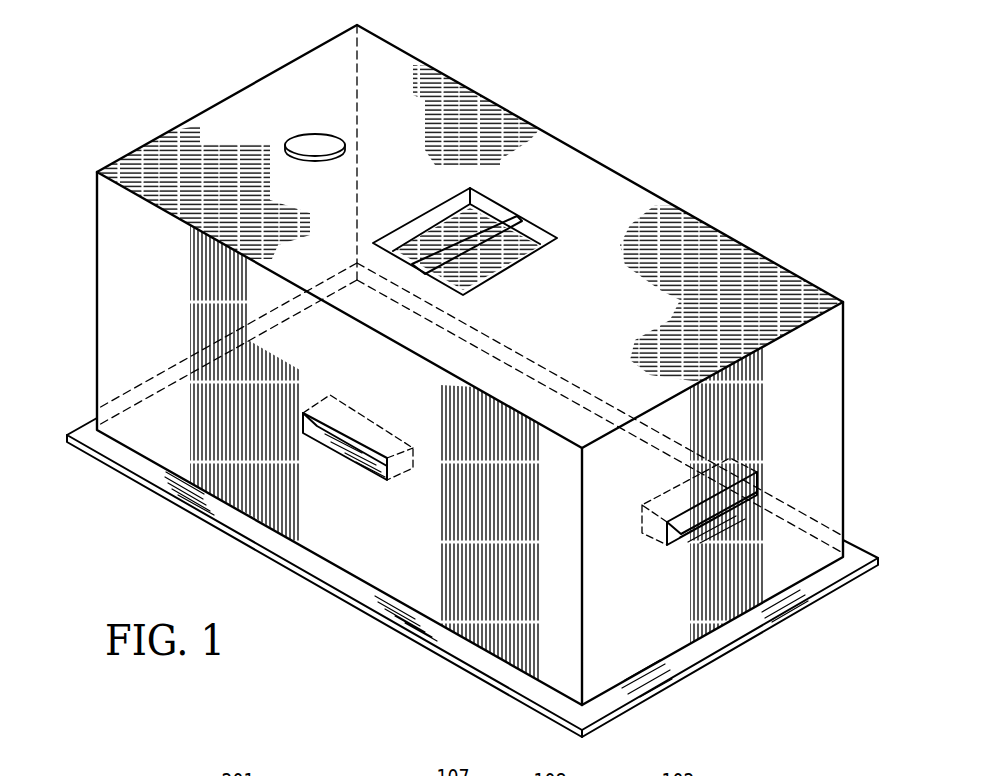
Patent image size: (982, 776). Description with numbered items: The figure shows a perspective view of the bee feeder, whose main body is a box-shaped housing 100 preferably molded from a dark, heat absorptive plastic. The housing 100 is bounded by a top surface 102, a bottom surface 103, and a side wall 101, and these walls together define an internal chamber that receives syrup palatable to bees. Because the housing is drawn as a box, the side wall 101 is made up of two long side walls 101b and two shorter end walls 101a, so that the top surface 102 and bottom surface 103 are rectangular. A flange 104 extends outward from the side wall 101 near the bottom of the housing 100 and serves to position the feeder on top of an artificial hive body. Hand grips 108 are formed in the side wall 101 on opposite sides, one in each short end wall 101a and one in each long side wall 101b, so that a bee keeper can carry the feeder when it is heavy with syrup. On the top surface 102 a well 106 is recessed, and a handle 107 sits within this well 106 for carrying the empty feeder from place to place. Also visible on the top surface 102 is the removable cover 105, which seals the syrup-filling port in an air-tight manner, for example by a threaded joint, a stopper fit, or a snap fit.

The housing 100 is at (208, 60).
The side wall 101 is at (97, 233).
The end wall 101a is at (185, 173).
The long side wall 101b is at (227, 402).
The top surface 102 is at (737, 283).
The bottom surface 103 is at (272, 542).
The flange 104 is at (760, 627).
The removable cover 105 is at (305, 137).
The well 106 is at (525, 243).
The handle 107 is at (502, 217).
The hand grip 108 is at (373, 468).